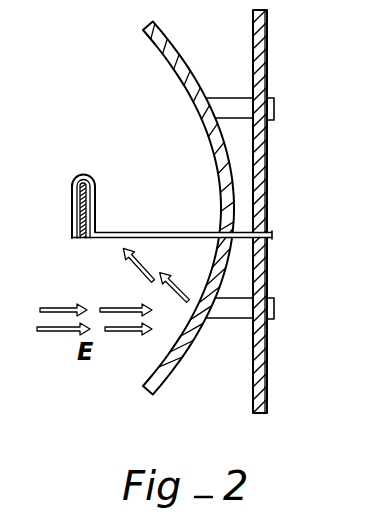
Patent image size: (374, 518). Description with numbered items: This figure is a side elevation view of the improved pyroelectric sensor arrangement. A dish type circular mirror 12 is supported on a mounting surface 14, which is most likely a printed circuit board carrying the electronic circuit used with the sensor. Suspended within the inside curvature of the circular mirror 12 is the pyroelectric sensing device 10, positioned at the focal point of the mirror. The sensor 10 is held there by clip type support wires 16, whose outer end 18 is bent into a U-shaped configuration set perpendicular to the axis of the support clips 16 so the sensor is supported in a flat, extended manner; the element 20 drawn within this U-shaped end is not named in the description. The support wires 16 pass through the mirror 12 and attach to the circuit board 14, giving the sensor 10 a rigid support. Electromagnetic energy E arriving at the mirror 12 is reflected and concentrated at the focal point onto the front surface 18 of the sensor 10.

The pyroelectric sensing device 10 is at (79, 179).
The dish type circular mirror 12 is at (145, 36).
The mounting surface 14 is at (267, 32).
The clip type support wires 16 is at (134, 232).
The outer end of the support wires 18 is at (93, 188).
The sensing element core 20 is at (79, 207).